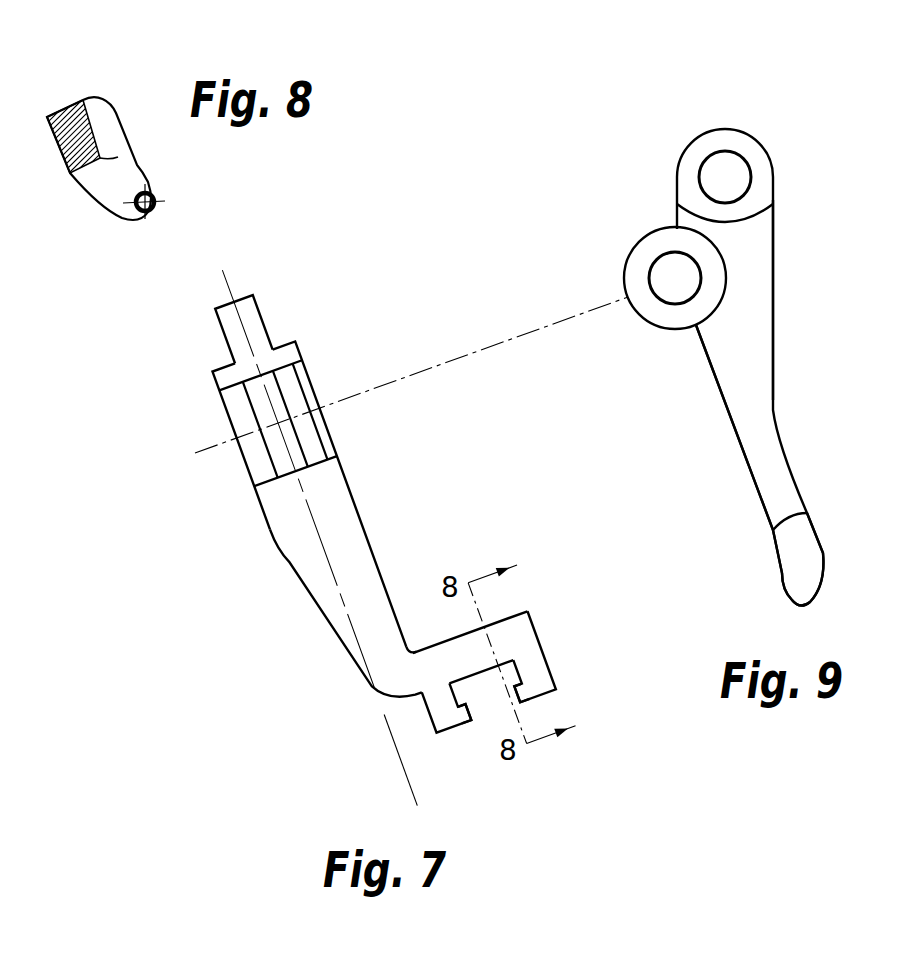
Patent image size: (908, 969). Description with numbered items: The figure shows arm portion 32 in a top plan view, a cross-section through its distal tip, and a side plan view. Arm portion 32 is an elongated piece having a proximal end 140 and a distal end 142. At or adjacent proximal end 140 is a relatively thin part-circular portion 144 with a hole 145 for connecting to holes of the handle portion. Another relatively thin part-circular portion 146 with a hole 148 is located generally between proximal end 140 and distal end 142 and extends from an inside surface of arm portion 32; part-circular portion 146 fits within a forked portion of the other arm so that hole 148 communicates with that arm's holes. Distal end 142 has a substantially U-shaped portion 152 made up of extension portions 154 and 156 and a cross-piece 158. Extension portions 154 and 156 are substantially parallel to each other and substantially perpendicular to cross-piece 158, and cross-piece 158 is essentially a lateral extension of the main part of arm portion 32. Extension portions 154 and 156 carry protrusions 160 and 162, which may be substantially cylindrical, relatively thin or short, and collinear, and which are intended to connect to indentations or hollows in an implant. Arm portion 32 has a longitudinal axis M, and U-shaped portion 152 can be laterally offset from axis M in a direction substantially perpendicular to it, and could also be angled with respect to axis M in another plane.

In FIG. 7, the arm portion 32 is at (307, 294).
In FIG. 9, the arm portion 32 is at (767, 120).
In FIG. 7, the proximal end 140 is at (198, 388).
In FIG. 9, the proximal end 140 is at (796, 159).
In FIG. 7, the distal end 142 is at (407, 719).
In FIG. 9, the distal end 142 is at (758, 616).
In FIG. 7, the part-circular portion 144 is at (233, 303).
In FIG. 9, the part-circular portion 144 is at (702, 147).
In FIG. 9, the hole 145 is at (720, 177).
In FIG. 7, the part-circular portion 146 is at (292, 448).
In FIG. 9, the part-circular portion 146 is at (663, 313).
In FIG. 9, the hole 148 is at (672, 277).
In FIG. 7, the U-shaped portion 152 is at (453, 627).
In FIG. 7, the extension portion 154 is at (445, 733).
In FIG. 8, the extension portion 156 is at (102, 124).
In FIG. 7, the extension portion 156 is at (544, 676).
In FIG. 9, the extension portion 156 is at (812, 566).
In FIG. 7, the cross-piece 158 is at (440, 640).
In FIG. 7, the protrusion 160 is at (468, 717).
In FIG. 8, the protrusion 162 is at (167, 193).
In FIG. 7, the protrusion 162 is at (524, 700).
In FIG. 7, the longitudinal axis M is at (384, 789).